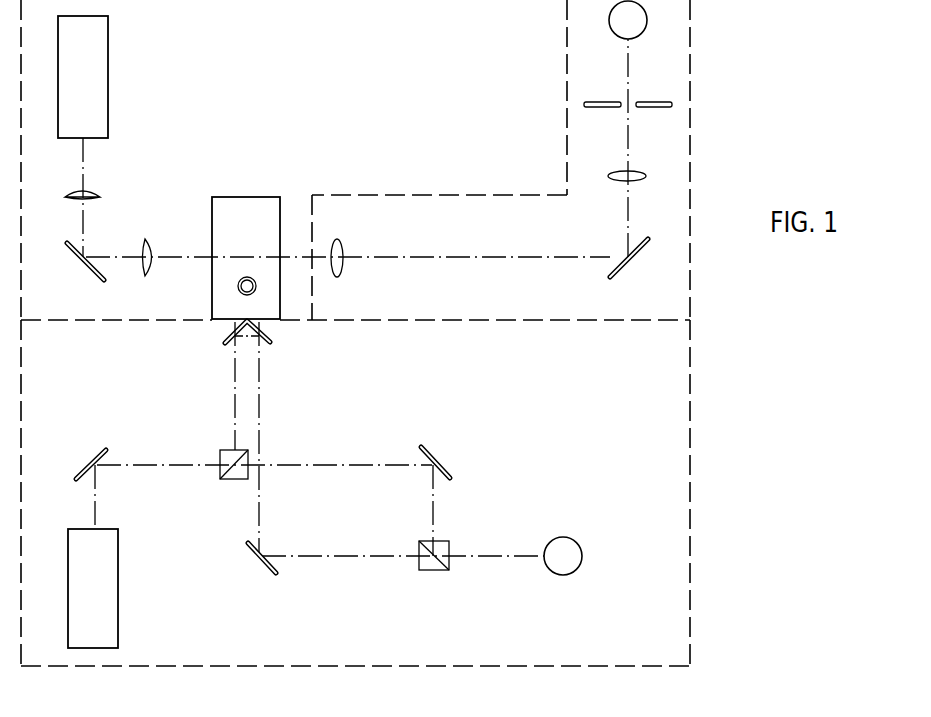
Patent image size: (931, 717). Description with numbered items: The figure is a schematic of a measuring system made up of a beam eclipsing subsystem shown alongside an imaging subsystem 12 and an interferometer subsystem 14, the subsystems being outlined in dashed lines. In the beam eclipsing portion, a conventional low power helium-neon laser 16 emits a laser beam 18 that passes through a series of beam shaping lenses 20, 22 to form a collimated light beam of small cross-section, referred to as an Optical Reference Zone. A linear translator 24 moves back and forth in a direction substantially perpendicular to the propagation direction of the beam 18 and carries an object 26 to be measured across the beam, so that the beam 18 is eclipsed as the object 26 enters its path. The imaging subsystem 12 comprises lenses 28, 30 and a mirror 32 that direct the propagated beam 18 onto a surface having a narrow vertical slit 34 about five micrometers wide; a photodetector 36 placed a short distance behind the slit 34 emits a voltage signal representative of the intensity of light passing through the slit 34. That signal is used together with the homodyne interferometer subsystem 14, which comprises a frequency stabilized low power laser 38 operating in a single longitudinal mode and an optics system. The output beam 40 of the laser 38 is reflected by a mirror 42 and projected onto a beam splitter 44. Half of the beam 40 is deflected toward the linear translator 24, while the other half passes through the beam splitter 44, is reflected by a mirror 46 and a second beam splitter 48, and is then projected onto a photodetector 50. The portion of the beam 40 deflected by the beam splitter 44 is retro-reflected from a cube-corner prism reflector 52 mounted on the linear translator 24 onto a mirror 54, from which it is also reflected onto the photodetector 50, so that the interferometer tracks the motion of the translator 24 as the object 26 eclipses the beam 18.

The imaging subsystem 12 is at (693, 135).
The interferometer subsystem 14 is at (692, 446).
The laser 16 is at (96, 86).
The laser beam 18 is at (86, 161).
The beam shaping lens 20 is at (97, 191).
The beam shaping lens 22 is at (150, 240).
The linear translator 24 is at (238, 197).
The object 26 is at (237, 285).
The lens 28 is at (341, 241).
The lens 30 is at (620, 170).
The mirror 32 is at (625, 269).
The slit 34 is at (622, 99).
The photodetector 36 is at (643, 33).
The laser 38 is at (104, 620).
The beam 40 is at (97, 508).
The mirror 42 is at (96, 451).
The beam splitter 44 is at (239, 480).
The mirror 46 is at (432, 453).
The second beam splitter 48 is at (434, 571).
The photodetector 50 is at (579, 567).
The cube-corner prism reflector 52 is at (263, 330).
The mirror 54 is at (262, 570).